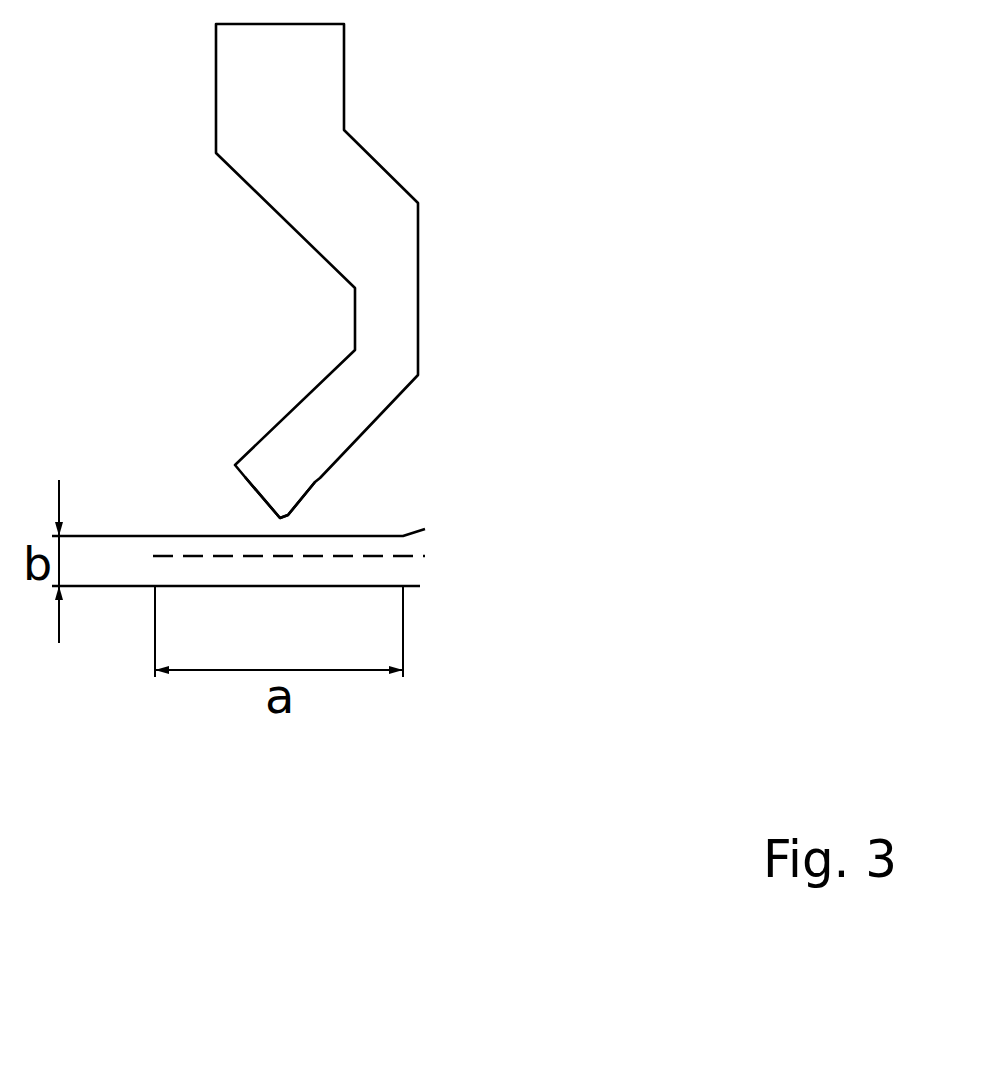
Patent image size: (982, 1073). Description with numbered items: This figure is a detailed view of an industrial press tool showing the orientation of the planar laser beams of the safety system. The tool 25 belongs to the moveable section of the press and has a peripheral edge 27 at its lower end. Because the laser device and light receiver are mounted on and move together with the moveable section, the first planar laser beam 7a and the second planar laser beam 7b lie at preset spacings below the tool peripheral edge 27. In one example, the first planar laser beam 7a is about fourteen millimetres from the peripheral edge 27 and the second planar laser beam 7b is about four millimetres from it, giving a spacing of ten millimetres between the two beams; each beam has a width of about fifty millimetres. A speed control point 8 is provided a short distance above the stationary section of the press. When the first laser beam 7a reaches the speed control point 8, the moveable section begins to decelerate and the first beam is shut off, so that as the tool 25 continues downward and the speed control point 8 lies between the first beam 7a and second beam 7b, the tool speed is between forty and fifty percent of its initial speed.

The tool 25 is at (421, 203).
The peripheral edge 27 is at (291, 513).
The second planar laser beam 7b is at (422, 530).
The first planar laser beam 7a is at (422, 585).
The speed control point 8 is at (426, 555).